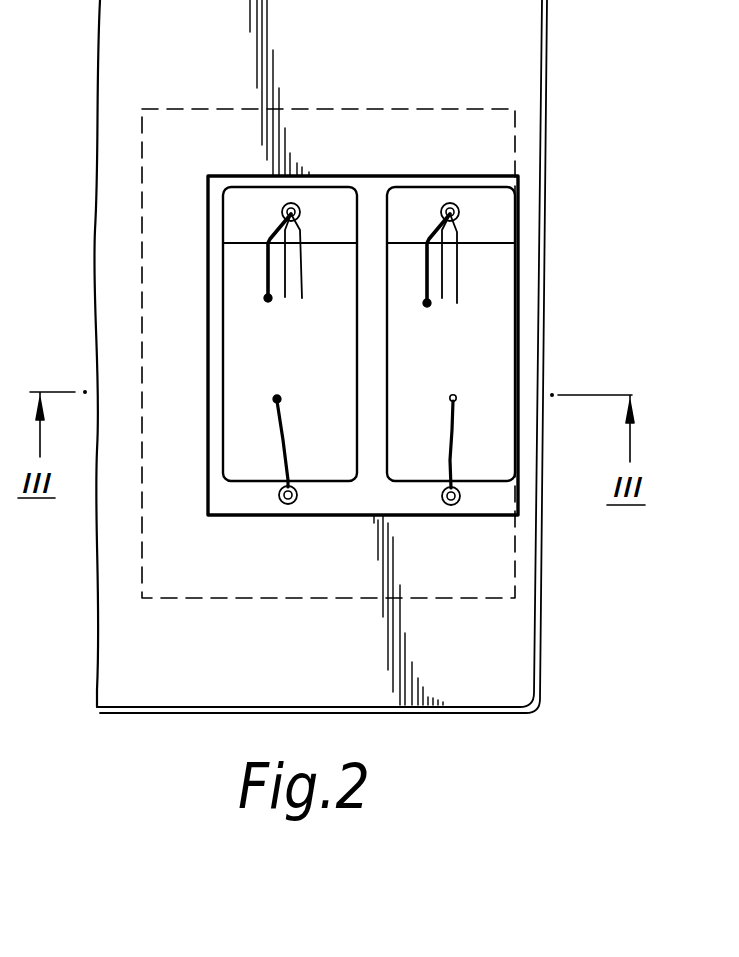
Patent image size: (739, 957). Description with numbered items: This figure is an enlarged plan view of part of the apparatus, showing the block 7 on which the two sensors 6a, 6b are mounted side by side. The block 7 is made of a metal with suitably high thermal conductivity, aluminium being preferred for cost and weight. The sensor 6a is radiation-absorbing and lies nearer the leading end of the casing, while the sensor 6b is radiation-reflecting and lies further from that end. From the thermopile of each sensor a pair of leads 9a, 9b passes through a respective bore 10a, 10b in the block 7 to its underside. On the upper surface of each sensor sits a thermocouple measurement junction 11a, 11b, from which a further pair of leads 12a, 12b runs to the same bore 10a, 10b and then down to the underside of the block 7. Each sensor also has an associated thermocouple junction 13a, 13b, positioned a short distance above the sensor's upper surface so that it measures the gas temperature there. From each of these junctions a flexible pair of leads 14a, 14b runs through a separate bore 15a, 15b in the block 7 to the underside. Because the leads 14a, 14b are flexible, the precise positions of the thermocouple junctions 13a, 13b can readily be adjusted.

The block 7 is at (506, 88).
The sensor 6a is at (482, 353).
The sensor 6b is at (247, 333).
The pair of leads 9a is at (441, 277).
The pair of leads 9b is at (286, 275).
The bore 10a is at (460, 212).
The bore 10b is at (282, 211).
The thermocouple measurement junction 11a is at (432, 306).
The thermocouple measurement junction 11b is at (264, 298).
The pair of leads 12a is at (426, 284).
The pair of leads 12b is at (267, 262).
The thermocouple junction 13a is at (460, 402).
The thermocouple junction 13b is at (270, 400).
The flexible pair of leads 14a is at (452, 448).
The flexible pair of leads 14b is at (282, 440).
The bore 15a is at (451, 505).
The bore 15b is at (288, 505).